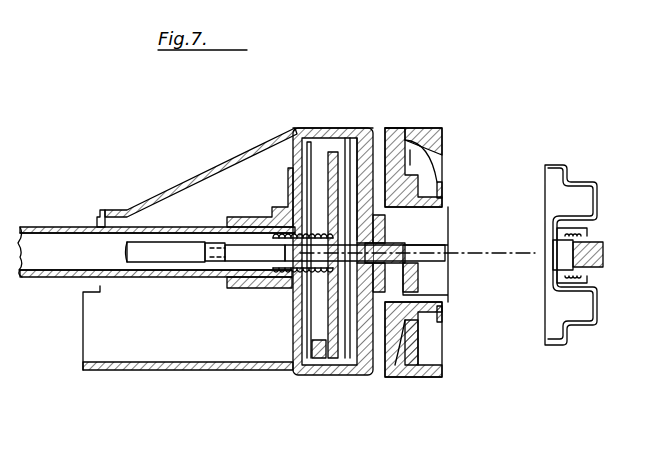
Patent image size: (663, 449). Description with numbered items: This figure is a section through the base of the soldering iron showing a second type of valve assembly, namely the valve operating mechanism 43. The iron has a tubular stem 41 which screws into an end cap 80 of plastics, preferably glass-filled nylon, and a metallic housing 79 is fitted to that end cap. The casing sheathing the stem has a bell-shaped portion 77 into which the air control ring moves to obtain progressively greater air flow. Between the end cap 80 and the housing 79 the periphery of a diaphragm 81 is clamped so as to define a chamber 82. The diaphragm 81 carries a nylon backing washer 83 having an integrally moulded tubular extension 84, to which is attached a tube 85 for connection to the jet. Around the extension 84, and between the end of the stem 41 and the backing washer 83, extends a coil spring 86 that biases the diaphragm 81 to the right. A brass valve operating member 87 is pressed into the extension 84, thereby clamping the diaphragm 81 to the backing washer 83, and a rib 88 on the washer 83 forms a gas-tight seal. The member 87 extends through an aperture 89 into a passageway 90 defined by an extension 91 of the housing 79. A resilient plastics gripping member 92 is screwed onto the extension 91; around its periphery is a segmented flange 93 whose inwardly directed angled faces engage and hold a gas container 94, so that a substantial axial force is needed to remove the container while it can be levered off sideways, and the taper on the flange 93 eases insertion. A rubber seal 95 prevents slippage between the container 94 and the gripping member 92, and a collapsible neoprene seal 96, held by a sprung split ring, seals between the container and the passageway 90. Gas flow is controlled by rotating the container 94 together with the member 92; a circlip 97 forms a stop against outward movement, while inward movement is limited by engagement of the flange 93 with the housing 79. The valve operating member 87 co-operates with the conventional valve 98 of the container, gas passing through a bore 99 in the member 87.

The tubular stem 41 is at (37, 227).
The valve operating mechanism 43 is at (345, 122).
The bell-shaped portion 77 is at (164, 184).
The metallic housing 79 is at (362, 128).
The end cap 80 is at (292, 325).
The diaphragm 81 is at (335, 348).
The chamber 82 is at (355, 348).
The backing washer 83 is at (330, 345).
The tubular extension 84 is at (213, 288).
The tube 85 is at (130, 250).
The coil spring 86 is at (280, 282).
The valve operating member 87 is at (415, 251).
The rib 88 is at (336, 238).
The aperture 89 is at (408, 232).
The passageway 90 is at (449, 276).
The extension 91 is at (444, 312).
The gripping member 92 is at (393, 128).
The flange 93 is at (443, 143).
The gas container 94 is at (548, 346).
The rubber seal 95 is at (425, 352).
The collapsible neoprene seal 96 is at (412, 291).
The circlip 97 is at (444, 192).
The valve 98 is at (597, 243).
The bore 99 is at (220, 275).